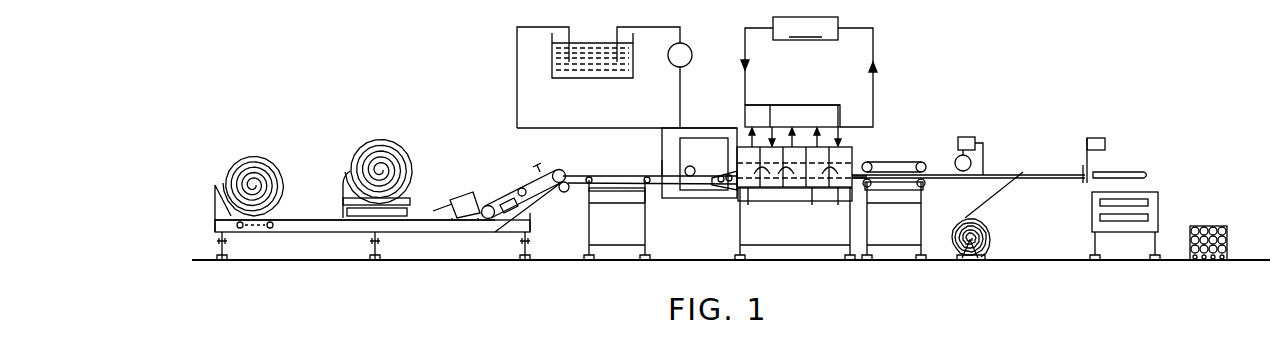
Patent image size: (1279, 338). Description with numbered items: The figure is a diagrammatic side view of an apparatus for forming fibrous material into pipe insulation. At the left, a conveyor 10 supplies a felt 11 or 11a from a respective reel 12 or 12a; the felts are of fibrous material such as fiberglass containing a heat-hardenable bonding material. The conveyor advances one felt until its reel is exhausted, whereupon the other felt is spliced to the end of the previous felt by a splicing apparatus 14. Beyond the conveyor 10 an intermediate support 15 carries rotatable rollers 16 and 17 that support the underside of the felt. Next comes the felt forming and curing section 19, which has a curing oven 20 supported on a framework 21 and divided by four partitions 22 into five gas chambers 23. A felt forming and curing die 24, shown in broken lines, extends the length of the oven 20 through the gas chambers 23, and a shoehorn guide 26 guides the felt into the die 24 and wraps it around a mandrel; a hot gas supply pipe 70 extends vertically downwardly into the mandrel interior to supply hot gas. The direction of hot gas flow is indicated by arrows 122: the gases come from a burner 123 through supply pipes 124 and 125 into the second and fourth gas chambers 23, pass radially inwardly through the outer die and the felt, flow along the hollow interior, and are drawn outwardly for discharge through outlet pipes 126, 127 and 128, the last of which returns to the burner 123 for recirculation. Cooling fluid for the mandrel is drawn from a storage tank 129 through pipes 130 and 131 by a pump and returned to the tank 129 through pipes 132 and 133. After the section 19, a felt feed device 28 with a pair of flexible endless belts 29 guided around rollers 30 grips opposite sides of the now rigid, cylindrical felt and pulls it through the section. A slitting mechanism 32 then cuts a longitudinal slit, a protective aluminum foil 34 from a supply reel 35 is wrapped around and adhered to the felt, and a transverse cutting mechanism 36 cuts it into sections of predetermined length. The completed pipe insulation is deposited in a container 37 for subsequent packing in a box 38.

The conveyor 10 is at (316, 234).
The felt 11 is at (290, 218).
The felt 11a is at (343, 182).
The reel 12 is at (262, 172).
The reel 12a is at (386, 152).
The splicing apparatus 14 is at (464, 194).
The intermediate support 15 is at (589, 242).
The rotatable roller 16 is at (648, 191).
The rotatable roller 17 is at (588, 183).
The felt forming and curing section 19 is at (864, 144).
The curing oven 20 is at (858, 160).
The framework 21 is at (738, 215).
The partitions 22 is at (832, 152).
The gas chambers 23 is at (792, 188).
The felt forming and curing die 24 is at (838, 205).
The shoehorn guide 26 is at (716, 190).
The felt feed device 28 is at (898, 150).
The flexible endless belts 29 is at (897, 160).
The rollers 30 is at (925, 183).
The slitting mechanism 32 is at (977, 138).
The aluminum foil 34 is at (978, 209).
The supply reel 35 is at (988, 237).
The transverse cutting mechanism 36 is at (1100, 143).
The container 37 is at (1160, 212).
The box 38 is at (1227, 240).
The hot gas supply pipe 70 is at (745, 110).
The arrows 122 is at (786, 206).
The burner 123 is at (805, 28).
The supply pipe 124 is at (748, 52).
The supply pipe 125 is at (770, 112).
The outlet pipe 126 is at (789, 116).
The outlet pipe 127 is at (813, 116).
The outlet pipe 128 is at (874, 56).
The storage tank 129 is at (620, 78).
The pipe 130 is at (680, 72).
The pipe 131 is at (700, 128).
The pipe 132 is at (662, 165).
The pipe 133 is at (598, 128).